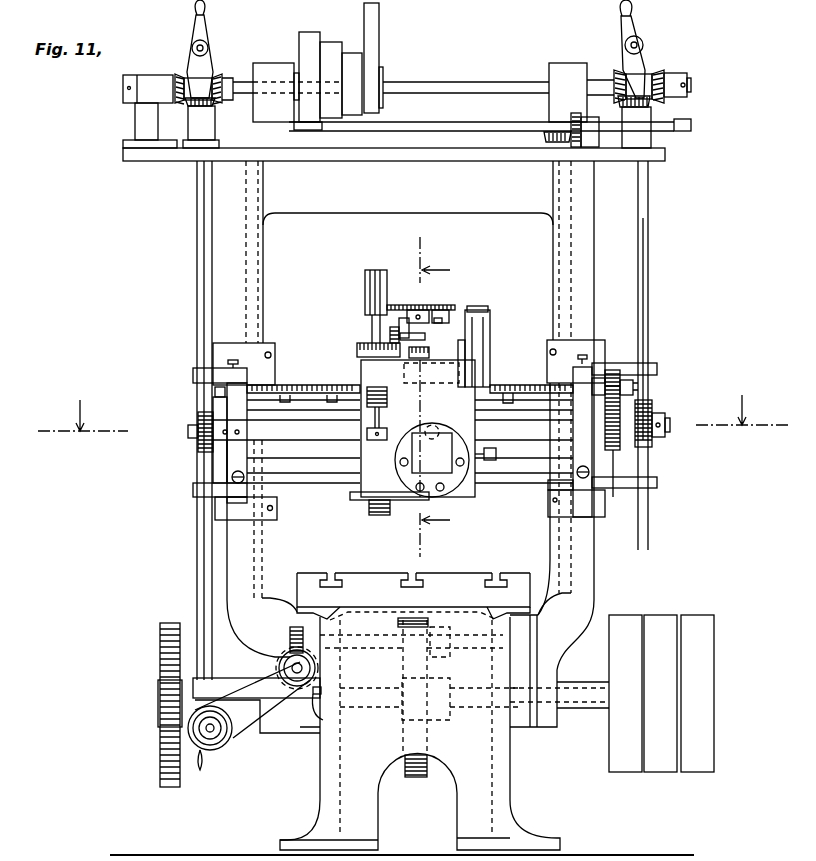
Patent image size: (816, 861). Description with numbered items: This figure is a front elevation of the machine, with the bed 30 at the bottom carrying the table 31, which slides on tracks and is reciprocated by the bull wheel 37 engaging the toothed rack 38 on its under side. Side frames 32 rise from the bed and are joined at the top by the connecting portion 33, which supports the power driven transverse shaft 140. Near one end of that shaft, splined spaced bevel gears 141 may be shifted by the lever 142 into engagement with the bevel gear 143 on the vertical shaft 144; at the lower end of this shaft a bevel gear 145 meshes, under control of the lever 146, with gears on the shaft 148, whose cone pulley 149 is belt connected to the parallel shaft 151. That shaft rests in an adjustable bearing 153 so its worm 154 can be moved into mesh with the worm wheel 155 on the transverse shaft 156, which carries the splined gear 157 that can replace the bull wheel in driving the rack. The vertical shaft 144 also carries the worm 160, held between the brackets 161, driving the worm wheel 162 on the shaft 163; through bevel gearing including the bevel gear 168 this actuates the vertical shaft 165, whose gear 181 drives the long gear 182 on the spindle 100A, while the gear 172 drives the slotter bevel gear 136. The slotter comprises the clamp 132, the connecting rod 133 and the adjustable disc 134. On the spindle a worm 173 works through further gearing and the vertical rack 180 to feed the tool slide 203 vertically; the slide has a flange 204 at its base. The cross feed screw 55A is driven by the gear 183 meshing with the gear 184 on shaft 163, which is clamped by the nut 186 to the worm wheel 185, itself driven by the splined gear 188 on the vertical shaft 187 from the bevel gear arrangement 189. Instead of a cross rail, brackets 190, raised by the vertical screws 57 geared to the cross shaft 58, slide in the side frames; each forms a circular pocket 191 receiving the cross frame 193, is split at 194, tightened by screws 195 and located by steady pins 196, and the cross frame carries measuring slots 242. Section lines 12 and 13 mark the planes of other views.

The section line 12- 12 is at (414, 411).
The section line 13- 13 is at (441, 397).
The bed 30 is at (500, 775).
The table 31 is at (362, 582).
The side frames 32 is at (242, 300).
The connecting portion 33 is at (377, 198).
The bull wheel 37 is at (415, 778).
The toothed rack 38 is at (398, 623).
The cross feed screw 55A is at (339, 385).
The vertical screws 57 is at (253, 257).
The cross shaft 58 is at (674, 128).
The spindle 100A is at (373, 325).
The clamp 132 is at (496, 450).
The connecting rod 133 is at (490, 357).
The disc 134 is at (472, 337).
The bevel gear 136 is at (393, 318).
The power driven transverse shaft 140 is at (465, 87).
The splined spaced bevel gears 141 is at (213, 70).
The lever 142 is at (197, 33).
The bevel gear 143 is at (173, 102).
The vertical shaft 144 is at (197, 255).
The bevel gear 145 is at (183, 713).
The lever 146 is at (200, 768).
The shaft 148 is at (211, 732).
The cone pulley 149 is at (225, 747).
The parallel shaft 151 is at (278, 662).
The adjustable bearing 153 is at (340, 738).
The worm 154 is at (305, 684).
The worm wheel 155 is at (290, 632).
The transverse shaft 156 is at (420, 686).
The gear 157 is at (447, 657).
The worm 160 is at (188, 432).
The brackets 161 is at (193, 375).
The worm wheel 162 is at (198, 448).
The shaft 163 is at (284, 432).
The vertical shaft 165 is at (432, 449).
The bevel gear 168 is at (415, 433).
The gear 172 is at (357, 345).
The worm 173 is at (410, 460).
The vertical rack 180 is at (418, 376).
The gear 181 is at (420, 305).
The gear 182 is at (372, 270).
The gear 183 is at (612, 370).
The gear 184 is at (612, 488).
The worm wheel 185 is at (648, 447).
The nut 186 is at (659, 407).
The vertical shaft 187 is at (648, 287).
The splined gear 188 is at (651, 103).
The bevel gear arrangement 189 is at (651, 70).
The brackets 190 is at (242, 510).
The circular pocket 191 is at (215, 390).
The cross frame 193 is at (247, 405).
The split 194 is at (233, 500).
The tightening screws 195 is at (232, 475).
The steady pins 196 is at (236, 358).
The tool slide 203 is at (379, 478).
The flange 204 is at (449, 305).
The slots 242 is at (510, 393).